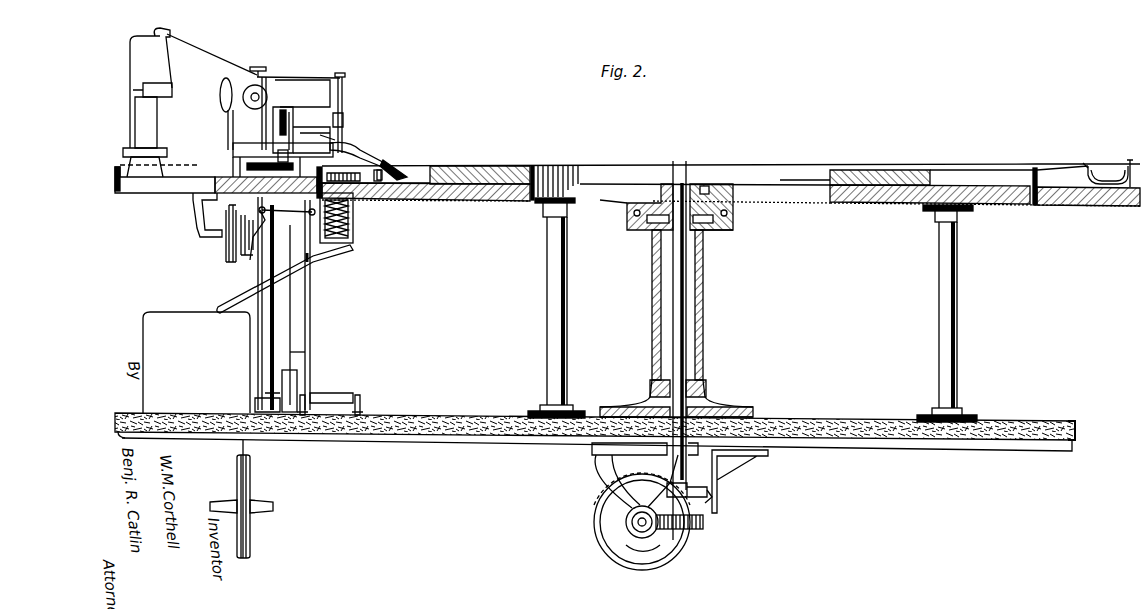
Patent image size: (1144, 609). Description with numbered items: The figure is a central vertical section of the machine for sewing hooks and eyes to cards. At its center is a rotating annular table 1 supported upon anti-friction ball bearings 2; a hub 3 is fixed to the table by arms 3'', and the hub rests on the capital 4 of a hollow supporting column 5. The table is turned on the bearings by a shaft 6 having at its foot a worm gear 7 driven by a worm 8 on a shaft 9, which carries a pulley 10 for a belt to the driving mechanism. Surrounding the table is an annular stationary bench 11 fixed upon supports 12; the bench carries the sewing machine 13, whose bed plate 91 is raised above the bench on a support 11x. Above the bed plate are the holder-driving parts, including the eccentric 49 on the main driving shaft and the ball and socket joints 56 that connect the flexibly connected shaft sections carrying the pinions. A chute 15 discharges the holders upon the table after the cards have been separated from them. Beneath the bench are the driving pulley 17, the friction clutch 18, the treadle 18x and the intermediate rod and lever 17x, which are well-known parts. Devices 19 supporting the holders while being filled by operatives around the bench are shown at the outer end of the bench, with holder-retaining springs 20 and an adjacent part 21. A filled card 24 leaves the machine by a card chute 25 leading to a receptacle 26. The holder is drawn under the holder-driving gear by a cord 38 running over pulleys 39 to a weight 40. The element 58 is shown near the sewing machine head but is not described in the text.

The rotating annular table 1 is at (931, 197).
The anti-friction ball bearings 2 is at (735, 222).
The hub 3 is at (635, 213).
The arms 3'' is at (610, 207).
The capital 4 is at (705, 232).
The hollow supporting column 5 is at (706, 298).
The shaft 6 is at (689, 342).
The worm gear 7 is at (697, 530).
The worm 8 is at (648, 535).
The shaft 9 is at (637, 533).
The pulley 10 is at (670, 480).
The annular stationary bench 11 is at (627, 198).
The support 11x is at (254, 165).
The supports 12 is at (547, 297).
The sewing machine 13 is at (293, 90).
The chute 15 is at (378, 162).
The driving pulley 17 is at (246, 499).
The intermediate rod and lever 17x is at (312, 330).
The friction clutch 18 is at (240, 262).
The treadle 18x is at (337, 390).
The holder supporting devices 19 is at (1108, 163).
The holder-retaining springs 20 is at (1084, 163).
The post 21 is at (1135, 166).
The filled card 24 is at (355, 222).
The card chute 25 is at (318, 270).
The receptacle 26 is at (196, 362).
The cord 38 is at (310, 352).
The pulleys 39 is at (307, 167).
The weight 40 is at (300, 378).
The eccentric 49 is at (300, 133).
The ball and socket joints 56 is at (343, 122).
The bobbin case 58 is at (284, 153).
The bed plate 91 is at (247, 147).